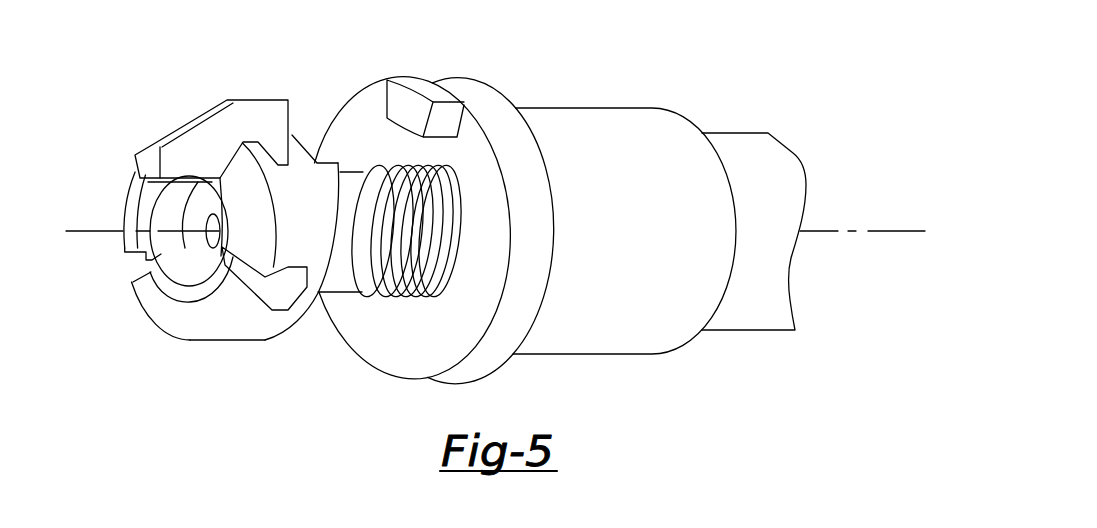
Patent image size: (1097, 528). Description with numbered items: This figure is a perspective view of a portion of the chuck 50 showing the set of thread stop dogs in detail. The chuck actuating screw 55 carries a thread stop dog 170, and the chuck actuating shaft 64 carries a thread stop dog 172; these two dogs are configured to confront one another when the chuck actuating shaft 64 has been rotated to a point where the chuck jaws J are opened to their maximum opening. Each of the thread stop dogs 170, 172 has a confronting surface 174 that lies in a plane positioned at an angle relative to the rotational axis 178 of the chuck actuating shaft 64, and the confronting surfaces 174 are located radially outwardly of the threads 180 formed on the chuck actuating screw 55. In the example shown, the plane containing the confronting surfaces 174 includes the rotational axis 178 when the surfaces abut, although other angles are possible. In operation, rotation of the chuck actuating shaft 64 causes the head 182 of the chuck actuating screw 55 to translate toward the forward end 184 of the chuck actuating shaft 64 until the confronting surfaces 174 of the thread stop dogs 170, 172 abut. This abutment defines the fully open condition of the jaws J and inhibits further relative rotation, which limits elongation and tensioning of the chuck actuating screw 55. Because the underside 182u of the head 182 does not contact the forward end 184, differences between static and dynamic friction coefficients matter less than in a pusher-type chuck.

The coupling assembly 50 is at (597, 81).
The chuck actuating screw 55 is at (131, 207).
The chuck actuating shaft 64 is at (670, 135).
The thread stop dog 170 is at (330, 173).
The thread stop dog 172 is at (430, 82).
The confronting surface 174 is at (328, 162).
The rotational axis 178 is at (835, 234).
The threads 180 is at (342, 294).
The head 182 is at (250, 332).
The underside 182u is at (293, 327).
The forward end 184 is at (503, 253).
The chuck jaws J is at (188, 146).